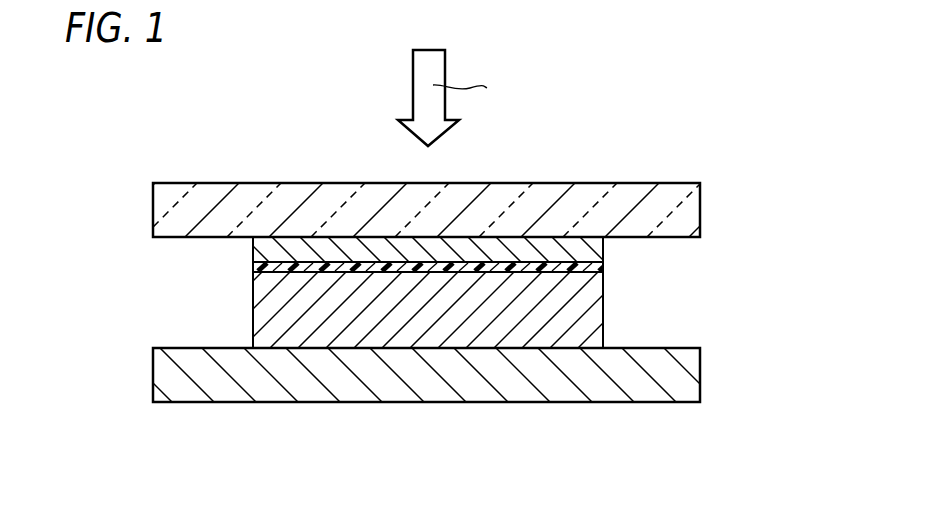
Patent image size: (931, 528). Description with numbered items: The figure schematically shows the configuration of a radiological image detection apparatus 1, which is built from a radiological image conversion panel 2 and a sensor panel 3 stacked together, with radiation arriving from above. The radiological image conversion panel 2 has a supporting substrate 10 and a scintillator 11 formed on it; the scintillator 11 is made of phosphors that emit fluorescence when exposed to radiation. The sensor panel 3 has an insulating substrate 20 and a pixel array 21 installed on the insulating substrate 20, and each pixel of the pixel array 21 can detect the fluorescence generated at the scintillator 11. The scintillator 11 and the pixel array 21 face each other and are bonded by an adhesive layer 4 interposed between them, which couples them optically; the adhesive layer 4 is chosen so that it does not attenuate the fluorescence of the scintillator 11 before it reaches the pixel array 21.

The radiological image detection apparatus 1 is at (794, 81).
The radiological image conversion panel 2 is at (718, 416).
The sensor panel 3 is at (720, 168).
The insulating substrate 20 is at (693, 210).
The pixel array 21 is at (592, 250).
The adhesive layer 4 is at (592, 265).
The scintillator 11 is at (592, 316).
The supporting substrate 10 is at (693, 375).